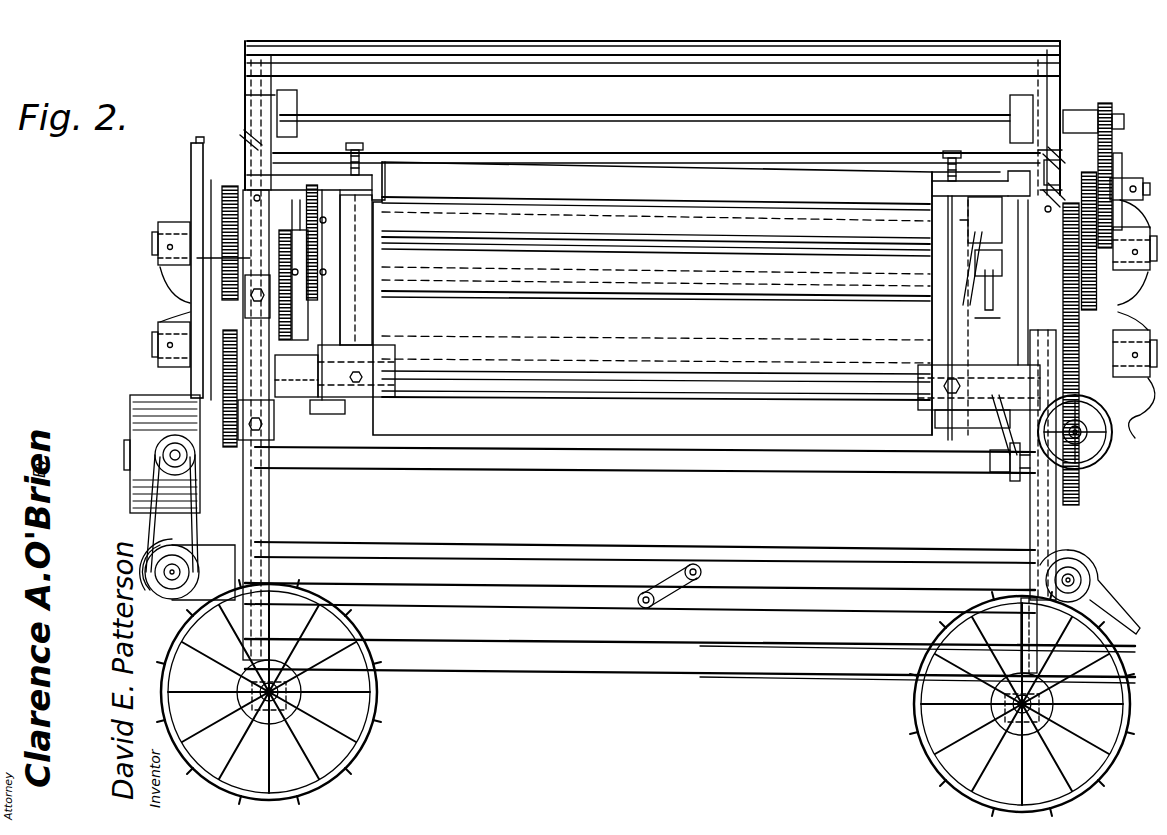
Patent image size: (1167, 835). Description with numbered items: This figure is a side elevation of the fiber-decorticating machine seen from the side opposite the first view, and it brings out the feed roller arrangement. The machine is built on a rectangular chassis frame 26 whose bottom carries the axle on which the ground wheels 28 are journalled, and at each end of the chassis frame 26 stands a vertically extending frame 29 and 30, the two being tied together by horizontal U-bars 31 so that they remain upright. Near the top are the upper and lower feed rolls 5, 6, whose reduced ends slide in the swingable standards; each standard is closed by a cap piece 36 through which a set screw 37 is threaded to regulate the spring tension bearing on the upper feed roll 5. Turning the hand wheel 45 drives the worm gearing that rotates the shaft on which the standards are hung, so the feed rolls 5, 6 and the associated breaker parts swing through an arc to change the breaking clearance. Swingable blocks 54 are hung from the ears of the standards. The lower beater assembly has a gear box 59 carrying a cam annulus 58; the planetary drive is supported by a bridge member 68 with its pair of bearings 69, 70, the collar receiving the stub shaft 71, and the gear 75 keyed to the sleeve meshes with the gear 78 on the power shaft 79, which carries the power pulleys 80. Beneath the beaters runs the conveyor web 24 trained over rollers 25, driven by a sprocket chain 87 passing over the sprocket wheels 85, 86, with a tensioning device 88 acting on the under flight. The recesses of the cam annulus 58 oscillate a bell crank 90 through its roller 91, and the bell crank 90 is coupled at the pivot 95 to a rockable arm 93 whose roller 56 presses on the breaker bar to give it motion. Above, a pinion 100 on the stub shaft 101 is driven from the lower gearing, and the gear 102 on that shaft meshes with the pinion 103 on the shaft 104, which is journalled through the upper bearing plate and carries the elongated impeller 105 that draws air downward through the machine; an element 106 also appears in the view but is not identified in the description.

The upper feed roll 5 is at (726, 210).
The lower feed roll 6 is at (794, 300).
The conveyor web 24 is at (545, 546).
The rollers 25 is at (172, 548).
The chassis frame 26 is at (531, 662).
The wheels 28 is at (376, 740).
The vertically extending frame 29 is at (1062, 72).
The vertically extending frame 30 is at (250, 66).
The horizontal U-bars 31 is at (678, 60).
The cap piece 36 is at (386, 187).
The set screw 37 is at (366, 151).
The wheel 45 is at (1097, 462).
The blocks 54 is at (978, 240).
The roller 56 is at (985, 266).
The cam annulus 58 is at (1002, 432).
The gear box 59 is at (988, 426).
The bridge member 68 is at (184, 216).
The bearing 69 is at (162, 226).
The bearing 70 is at (165, 286).
The stub shaft 71 is at (152, 246).
The gear 75 is at (222, 210).
The gear 78 is at (270, 516).
The power shaft 79 is at (451, 470).
The power pulleys 80 is at (130, 398).
The sprocket wheel 85 is at (156, 494).
The sprocket wheel 86 is at (172, 603).
The sprocket chain 87 is at (152, 470).
The tensioning device 88 is at (694, 564).
The bell crank 90 is at (960, 360).
The roller 91 is at (1020, 483).
The rockable arm 93 is at (962, 305).
The pivotal connection 95 is at (990, 335).
The pinion 100 is at (1085, 178).
The stub shaft 101 is at (1133, 185).
The gear 102 is at (1112, 148).
The pinion 103 is at (1102, 108).
The shaft 104 is at (1115, 118).
The elongated impeller 105 is at (444, 119).
The rack gear 106 is at (1080, 512).